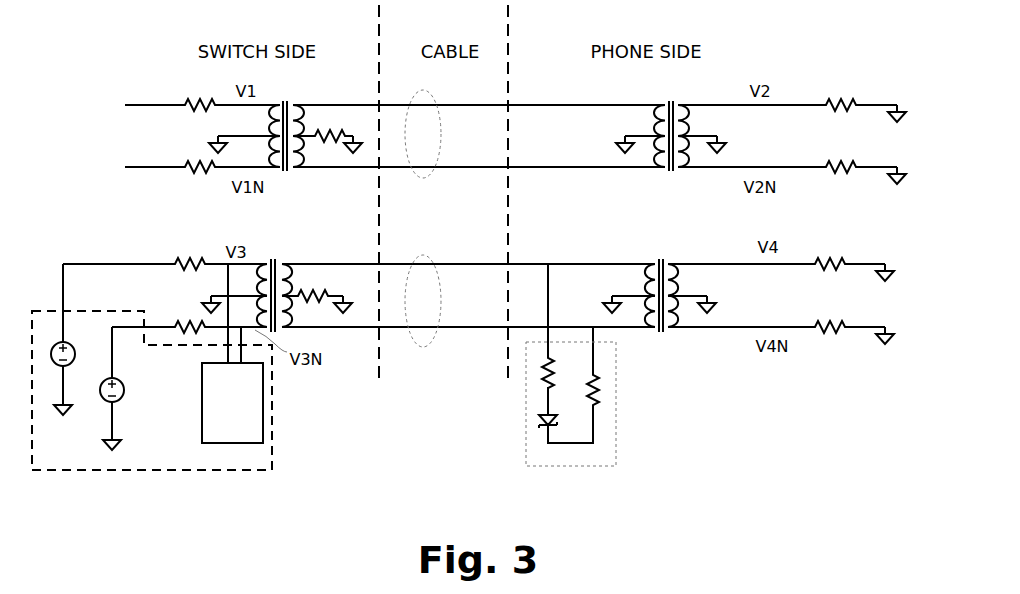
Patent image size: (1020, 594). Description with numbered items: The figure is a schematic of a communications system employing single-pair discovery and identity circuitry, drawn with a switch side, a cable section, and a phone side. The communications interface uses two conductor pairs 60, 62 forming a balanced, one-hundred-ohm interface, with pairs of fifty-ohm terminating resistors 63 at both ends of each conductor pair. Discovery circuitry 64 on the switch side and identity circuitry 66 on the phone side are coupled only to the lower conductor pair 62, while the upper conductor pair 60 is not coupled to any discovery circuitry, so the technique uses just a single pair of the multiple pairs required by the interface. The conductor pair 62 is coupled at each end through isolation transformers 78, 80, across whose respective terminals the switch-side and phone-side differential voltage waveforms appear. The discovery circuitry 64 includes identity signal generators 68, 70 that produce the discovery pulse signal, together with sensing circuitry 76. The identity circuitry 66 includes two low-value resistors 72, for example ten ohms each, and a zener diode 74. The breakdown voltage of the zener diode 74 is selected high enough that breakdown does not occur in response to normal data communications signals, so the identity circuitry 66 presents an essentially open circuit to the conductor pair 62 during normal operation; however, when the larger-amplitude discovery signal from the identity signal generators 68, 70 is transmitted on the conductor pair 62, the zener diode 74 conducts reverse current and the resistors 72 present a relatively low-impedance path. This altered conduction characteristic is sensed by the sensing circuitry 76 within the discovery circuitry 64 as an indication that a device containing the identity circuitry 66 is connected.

The conductor pair 60 is at (425, 178).
The conductor pair 62 is at (423, 347).
The terminating resistors 63 is at (192, 96).
The discovery circuitry 64 is at (272, 450).
The identity circuitry 66 is at (616, 428).
The identity signal generator 68 is at (75, 354).
The identity signal generator 70 is at (124, 392).
The low-value resistors 72 is at (556, 367).
The zener diode 74 is at (539, 421).
The sensing circuitry 76 is at (242, 424).
The isolation transformer 78 is at (285, 264).
The isolation transformer 80 is at (673, 264).